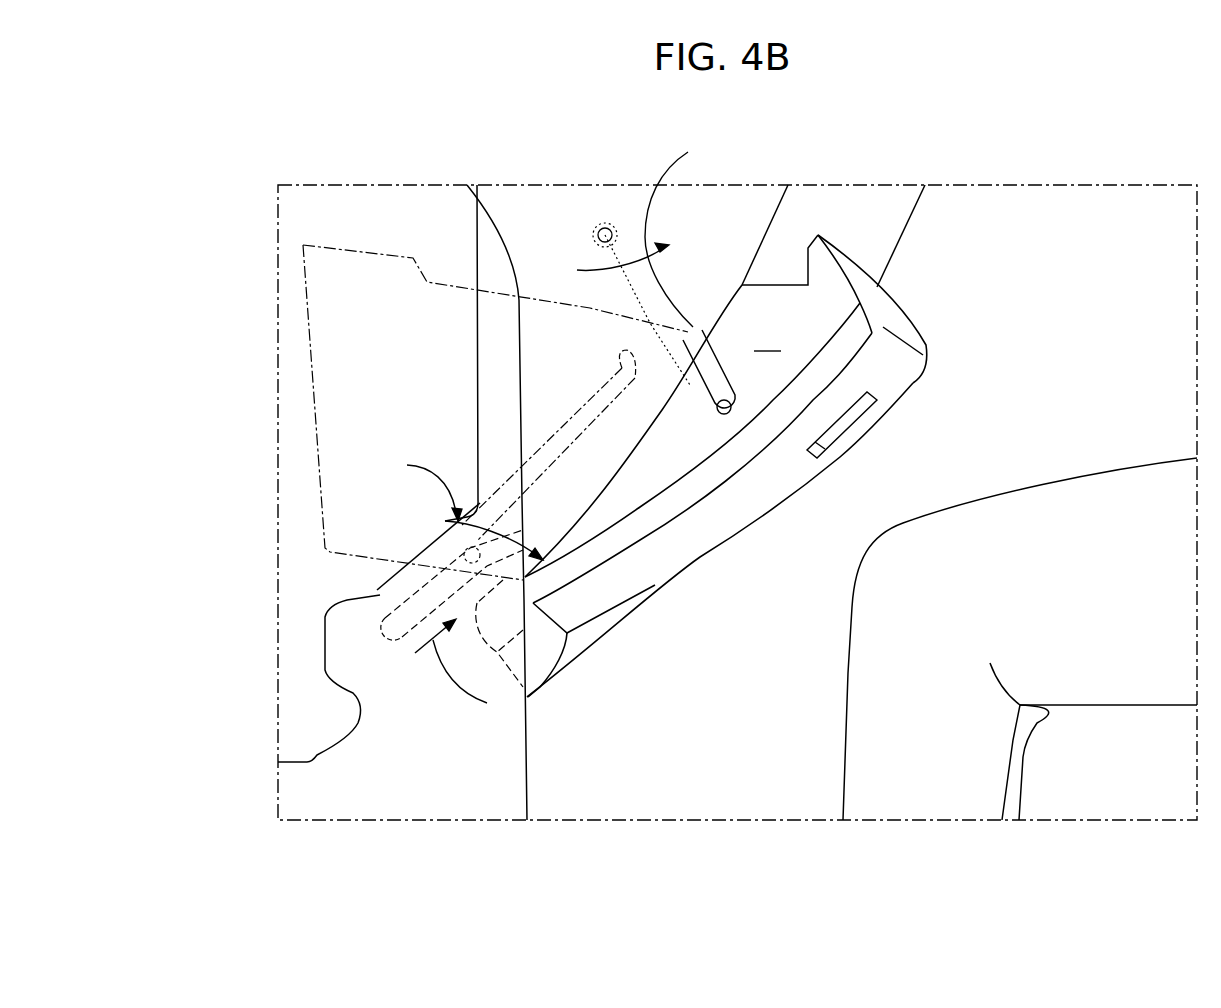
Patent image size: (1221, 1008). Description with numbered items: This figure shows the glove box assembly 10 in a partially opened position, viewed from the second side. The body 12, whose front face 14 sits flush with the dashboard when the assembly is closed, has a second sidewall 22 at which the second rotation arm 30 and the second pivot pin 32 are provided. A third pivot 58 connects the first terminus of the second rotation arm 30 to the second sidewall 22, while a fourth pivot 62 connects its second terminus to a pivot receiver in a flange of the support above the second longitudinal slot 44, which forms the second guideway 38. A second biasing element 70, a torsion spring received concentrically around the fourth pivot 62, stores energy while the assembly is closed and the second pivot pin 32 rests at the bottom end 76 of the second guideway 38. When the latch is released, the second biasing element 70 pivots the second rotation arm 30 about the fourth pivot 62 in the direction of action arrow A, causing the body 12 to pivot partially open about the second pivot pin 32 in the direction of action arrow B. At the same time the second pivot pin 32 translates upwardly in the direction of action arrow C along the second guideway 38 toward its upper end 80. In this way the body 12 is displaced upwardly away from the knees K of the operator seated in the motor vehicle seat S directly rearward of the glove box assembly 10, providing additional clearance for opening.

The glove box assembly 10 is at (330, 161).
The body 12 is at (920, 286).
The front face 14 is at (897, 373).
The second sidewall 22 is at (719, 466).
The second rotation arm 30 is at (693, 325).
The second pivot pin 32 is at (458, 538).
The second guideway 38 is at (538, 456).
The second longitudinal slot 44 is at (405, 605).
The third pivot 58 is at (730, 414).
The fourth pivot 62 is at (605, 222).
The second biasing element 70 is at (587, 235).
The bottom end of the second guideway 76 is at (397, 630).
The upper end of the second longitudinal slot 80 is at (627, 352).
The action arrow A is at (641, 228).
The action arrow B is at (465, 507).
The action arrow C is at (460, 668).
The knees K is at (877, 560).
The motor vehicle seat S is at (1127, 787).